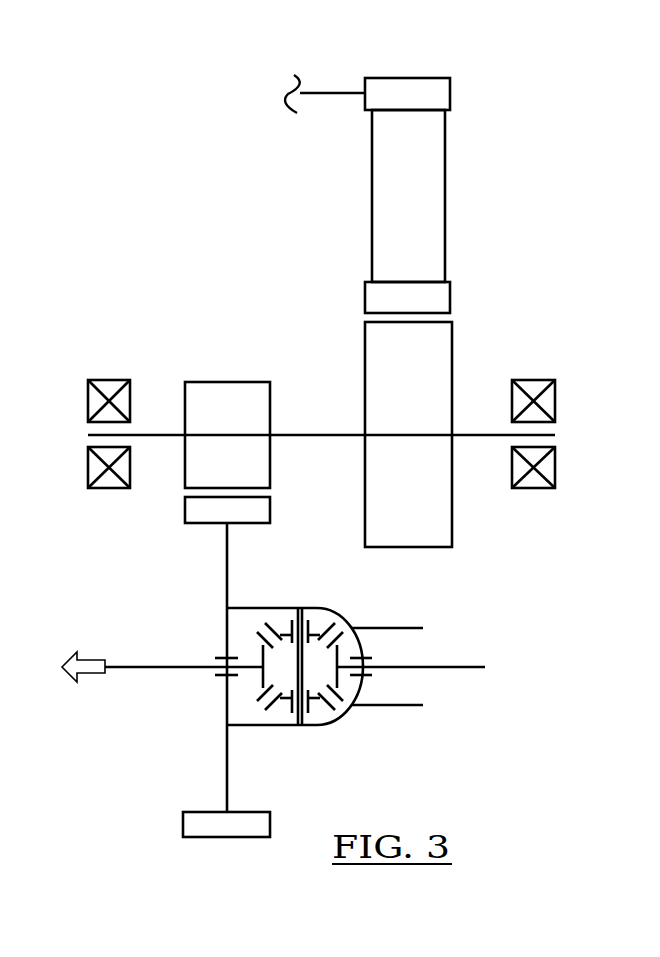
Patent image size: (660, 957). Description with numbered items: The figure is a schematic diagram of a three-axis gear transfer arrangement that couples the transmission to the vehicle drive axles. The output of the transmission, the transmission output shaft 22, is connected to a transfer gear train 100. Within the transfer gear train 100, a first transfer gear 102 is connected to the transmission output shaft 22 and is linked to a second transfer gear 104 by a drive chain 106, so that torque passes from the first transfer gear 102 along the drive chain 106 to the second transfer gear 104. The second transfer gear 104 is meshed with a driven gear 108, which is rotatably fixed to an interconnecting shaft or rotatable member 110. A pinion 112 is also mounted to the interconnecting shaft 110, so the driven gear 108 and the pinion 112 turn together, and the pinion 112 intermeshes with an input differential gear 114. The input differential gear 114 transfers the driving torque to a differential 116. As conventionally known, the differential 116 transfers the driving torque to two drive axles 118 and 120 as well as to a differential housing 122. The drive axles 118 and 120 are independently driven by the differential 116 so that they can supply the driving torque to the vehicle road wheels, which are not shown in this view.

The transmission output shaft 22 is at (330, 93).
The transfer gear train 100 is at (562, 107).
The first transfer gear 102 is at (432, 93).
The second transfer gear 104 is at (432, 297).
The drive chain 106 is at (432, 166).
The driven gear 108 is at (432, 357).
The interconnecting shaft 110 is at (530, 432).
The pinion 112 is at (248, 382).
The input differential gear 114 is at (255, 523).
The differential 116 is at (278, 726).
The drive axle 118 is at (165, 665).
The drive axle 120 is at (470, 667).
The differential housing 122 is at (398, 628).